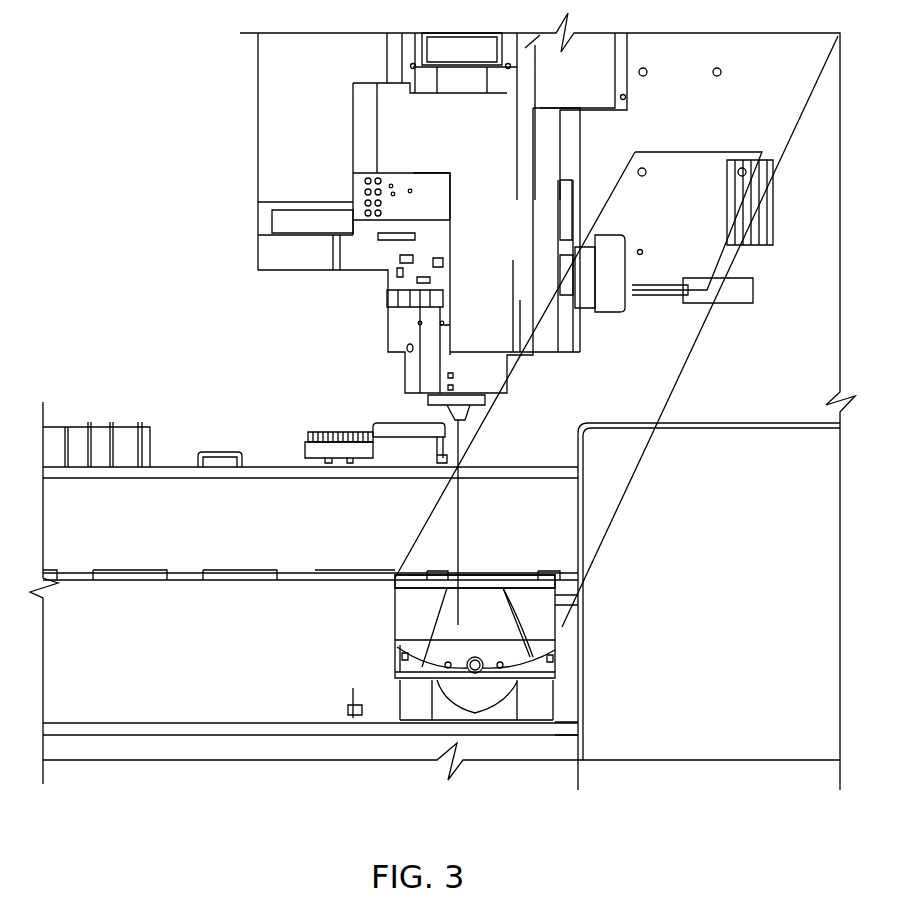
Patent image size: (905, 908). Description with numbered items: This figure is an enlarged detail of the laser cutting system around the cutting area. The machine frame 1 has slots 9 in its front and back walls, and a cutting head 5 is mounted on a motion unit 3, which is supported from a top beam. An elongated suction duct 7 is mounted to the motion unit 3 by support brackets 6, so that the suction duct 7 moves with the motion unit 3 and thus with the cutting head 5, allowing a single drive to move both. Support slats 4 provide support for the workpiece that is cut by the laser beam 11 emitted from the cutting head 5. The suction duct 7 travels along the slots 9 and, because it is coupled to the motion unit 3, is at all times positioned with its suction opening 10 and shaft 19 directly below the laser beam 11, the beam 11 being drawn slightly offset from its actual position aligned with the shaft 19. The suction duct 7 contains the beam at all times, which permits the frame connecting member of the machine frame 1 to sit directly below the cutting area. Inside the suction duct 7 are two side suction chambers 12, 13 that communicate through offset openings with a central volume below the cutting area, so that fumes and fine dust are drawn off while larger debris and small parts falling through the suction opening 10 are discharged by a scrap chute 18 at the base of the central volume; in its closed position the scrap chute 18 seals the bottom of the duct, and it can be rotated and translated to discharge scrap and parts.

The machine frame 1 is at (767, 445).
The motion unit 3 is at (770, 125).
The support slats 4 is at (112, 422).
The cutting head 5 is at (563, 328).
The support brackets 6 is at (645, 382).
The suction duct 7 is at (408, 617).
The slots 9 is at (157, 592).
The suction opening 10 is at (470, 598).
The laser beam 11 is at (452, 448).
The side suction chamber 12 is at (568, 622).
The side suction chamber 13 is at (400, 608).
The scrap chute 18 is at (503, 658).
The shaft 19 is at (470, 655).